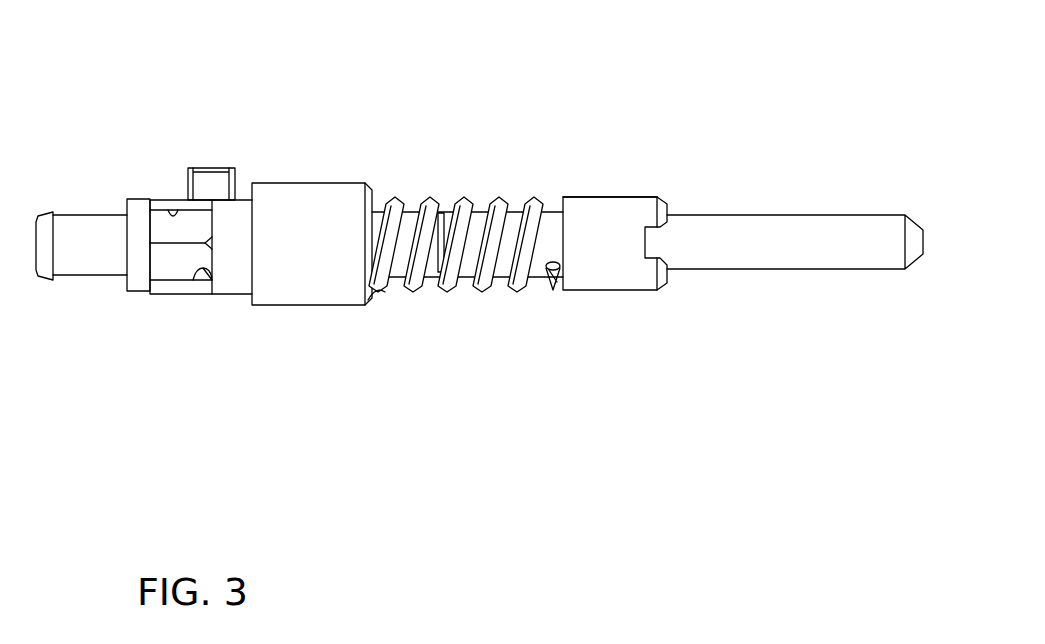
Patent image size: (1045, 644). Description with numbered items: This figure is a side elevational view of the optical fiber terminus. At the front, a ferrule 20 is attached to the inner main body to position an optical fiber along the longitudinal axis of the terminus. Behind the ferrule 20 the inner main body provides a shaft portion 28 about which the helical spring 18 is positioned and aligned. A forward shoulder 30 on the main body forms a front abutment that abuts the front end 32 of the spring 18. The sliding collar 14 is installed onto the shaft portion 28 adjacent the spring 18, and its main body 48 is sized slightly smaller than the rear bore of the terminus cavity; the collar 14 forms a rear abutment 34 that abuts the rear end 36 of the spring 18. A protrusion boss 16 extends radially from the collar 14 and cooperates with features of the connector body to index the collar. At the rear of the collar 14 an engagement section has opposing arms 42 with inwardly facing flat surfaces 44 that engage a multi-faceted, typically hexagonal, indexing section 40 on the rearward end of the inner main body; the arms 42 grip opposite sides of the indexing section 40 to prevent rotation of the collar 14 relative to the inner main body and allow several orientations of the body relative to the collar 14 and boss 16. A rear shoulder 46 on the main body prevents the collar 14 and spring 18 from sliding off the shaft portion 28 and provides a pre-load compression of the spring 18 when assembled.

The sliding collar 14 is at (321, 161).
The protrusion boss 16 is at (227, 172).
The helical spring 18 is at (463, 207).
The ferrule 20 is at (797, 252).
The shaft portion 28 is at (503, 283).
The forward shoulder 30 is at (563, 199).
The front end of the spring 32 is at (557, 287).
The rear abutment 34 is at (383, 295).
The rear end of the spring 36 is at (395, 283).
The indexing section 40 is at (168, 265).
The opposing arms 42 is at (158, 200).
The flat surfaces 44 is at (176, 215).
The rear shoulder 46 is at (133, 205).
The main body of the sliding collar 48 is at (302, 293).